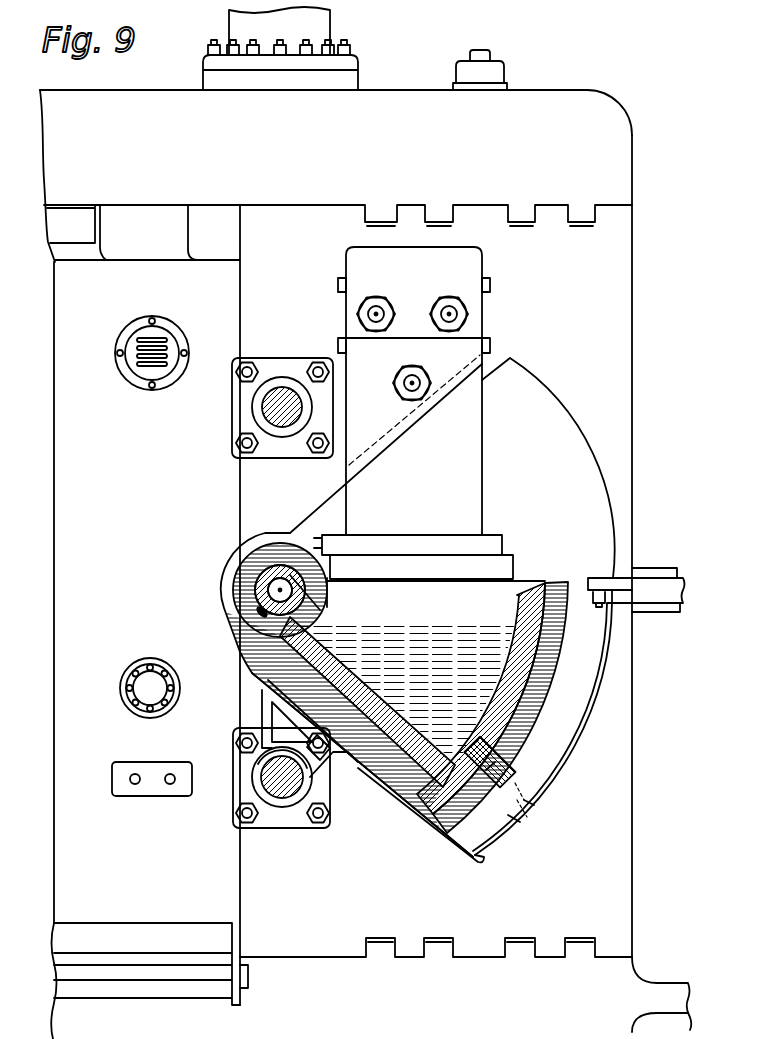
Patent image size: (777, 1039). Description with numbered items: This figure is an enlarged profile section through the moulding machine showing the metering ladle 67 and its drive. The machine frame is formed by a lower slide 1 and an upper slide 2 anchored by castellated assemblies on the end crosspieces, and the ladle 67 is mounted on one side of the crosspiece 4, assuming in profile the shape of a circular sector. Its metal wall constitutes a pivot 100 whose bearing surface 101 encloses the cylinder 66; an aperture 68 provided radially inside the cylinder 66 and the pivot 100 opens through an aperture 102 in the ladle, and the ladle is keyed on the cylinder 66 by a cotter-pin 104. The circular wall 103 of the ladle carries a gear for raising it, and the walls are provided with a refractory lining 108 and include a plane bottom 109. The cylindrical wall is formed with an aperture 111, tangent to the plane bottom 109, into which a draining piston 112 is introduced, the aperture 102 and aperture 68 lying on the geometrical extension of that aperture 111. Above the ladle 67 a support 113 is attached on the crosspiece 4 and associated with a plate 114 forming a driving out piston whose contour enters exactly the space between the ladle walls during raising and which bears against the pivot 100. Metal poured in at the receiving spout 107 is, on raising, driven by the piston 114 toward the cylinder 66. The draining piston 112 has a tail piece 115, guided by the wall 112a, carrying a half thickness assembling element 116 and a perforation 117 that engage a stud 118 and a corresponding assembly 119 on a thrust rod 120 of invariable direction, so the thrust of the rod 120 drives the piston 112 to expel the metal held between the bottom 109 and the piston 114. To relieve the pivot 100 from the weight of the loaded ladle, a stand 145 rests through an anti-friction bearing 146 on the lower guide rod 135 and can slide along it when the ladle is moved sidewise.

The lower slide 1 is at (613, 995).
The upper slide 2 is at (597, 118).
The end crosspiece 4 is at (613, 838).
The cylinder 66 is at (245, 586).
The ladle 67 is at (560, 585).
The aperture 68 is at (272, 620).
The pivot 100 is at (252, 562).
The bearing surface 101 is at (257, 580).
The aperture 102 is at (282, 632).
The circular wall 103 is at (546, 663).
The cotter-pin 104 is at (258, 608).
The receiving spout 107 is at (530, 588).
The refractory lining 108 is at (518, 663).
The plane bottom 109 is at (417, 770).
The aperture 111 is at (435, 822).
The draining piston 112 is at (503, 790).
The wall 112a is at (572, 758).
The support 113 is at (470, 331).
The plate forming driving out piston 114 is at (445, 570).
The tail piece 115 is at (537, 803).
The half thickness assembling element 116 is at (517, 777).
The perforation 117 is at (520, 823).
The stud 118 is at (600, 606).
The assembly 119 is at (612, 597).
The thrust rod 120 is at (648, 593).
The cylindrical guide 135 is at (283, 798).
The stand 145 is at (348, 763).
The anti-friction bearing 146 is at (265, 777).